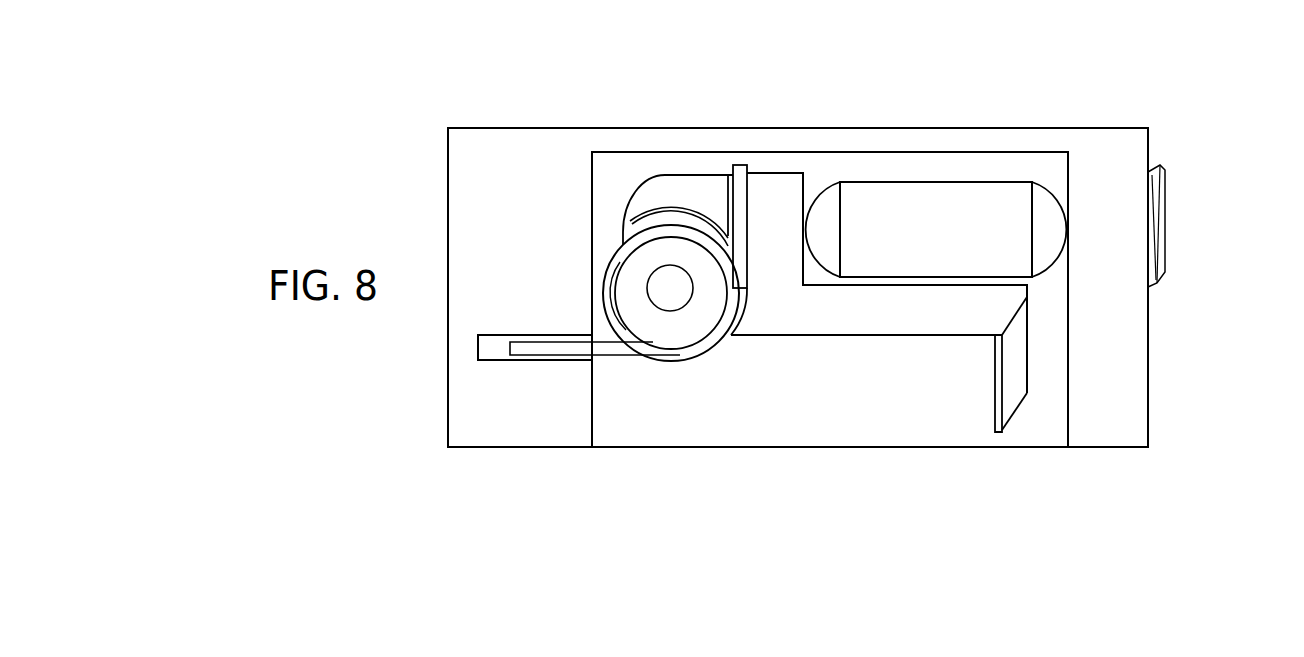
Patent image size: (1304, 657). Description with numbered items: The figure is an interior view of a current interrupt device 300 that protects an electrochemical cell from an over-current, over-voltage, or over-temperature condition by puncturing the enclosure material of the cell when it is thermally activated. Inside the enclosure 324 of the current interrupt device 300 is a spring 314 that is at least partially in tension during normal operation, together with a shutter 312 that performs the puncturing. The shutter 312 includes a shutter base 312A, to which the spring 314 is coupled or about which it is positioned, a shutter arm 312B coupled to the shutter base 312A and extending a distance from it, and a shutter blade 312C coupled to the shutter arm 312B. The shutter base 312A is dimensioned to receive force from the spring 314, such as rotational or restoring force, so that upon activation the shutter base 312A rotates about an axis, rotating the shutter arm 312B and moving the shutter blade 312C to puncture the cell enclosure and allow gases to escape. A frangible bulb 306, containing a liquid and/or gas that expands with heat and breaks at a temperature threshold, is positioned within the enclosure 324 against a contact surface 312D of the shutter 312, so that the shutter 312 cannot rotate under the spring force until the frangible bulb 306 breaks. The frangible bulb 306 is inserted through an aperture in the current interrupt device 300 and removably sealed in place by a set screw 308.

The current interrupt device 300 is at (456, 70).
The frangible bulb 306 is at (917, 198).
The set screw 308 is at (1153, 187).
The shutter 312 is at (831, 298).
The shutter base 312A is at (650, 323).
The shutter arm 312B is at (790, 315).
The shutter blade 312C is at (1008, 393).
The contact surface 312D is at (783, 198).
The spring 314 is at (617, 350).
The enclosure 324 is at (1137, 312).